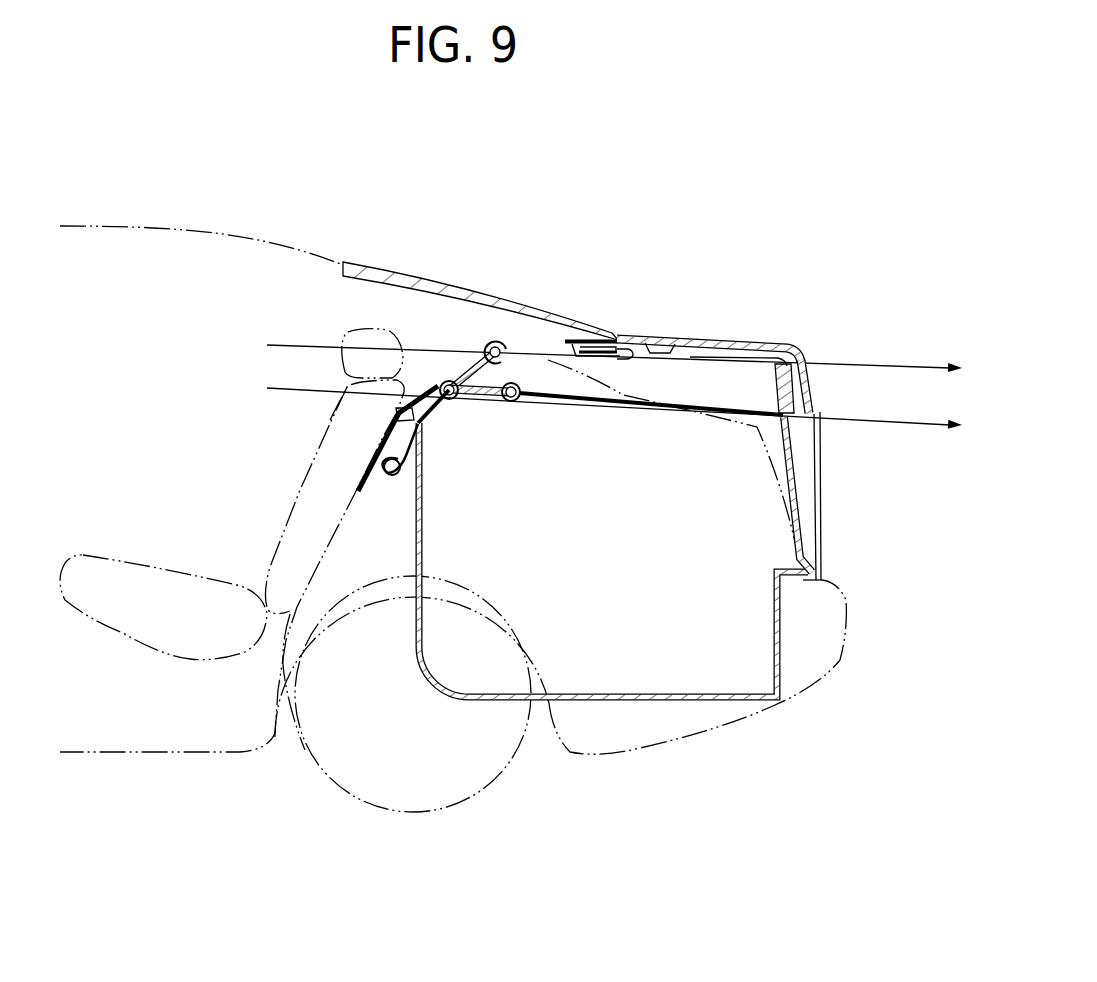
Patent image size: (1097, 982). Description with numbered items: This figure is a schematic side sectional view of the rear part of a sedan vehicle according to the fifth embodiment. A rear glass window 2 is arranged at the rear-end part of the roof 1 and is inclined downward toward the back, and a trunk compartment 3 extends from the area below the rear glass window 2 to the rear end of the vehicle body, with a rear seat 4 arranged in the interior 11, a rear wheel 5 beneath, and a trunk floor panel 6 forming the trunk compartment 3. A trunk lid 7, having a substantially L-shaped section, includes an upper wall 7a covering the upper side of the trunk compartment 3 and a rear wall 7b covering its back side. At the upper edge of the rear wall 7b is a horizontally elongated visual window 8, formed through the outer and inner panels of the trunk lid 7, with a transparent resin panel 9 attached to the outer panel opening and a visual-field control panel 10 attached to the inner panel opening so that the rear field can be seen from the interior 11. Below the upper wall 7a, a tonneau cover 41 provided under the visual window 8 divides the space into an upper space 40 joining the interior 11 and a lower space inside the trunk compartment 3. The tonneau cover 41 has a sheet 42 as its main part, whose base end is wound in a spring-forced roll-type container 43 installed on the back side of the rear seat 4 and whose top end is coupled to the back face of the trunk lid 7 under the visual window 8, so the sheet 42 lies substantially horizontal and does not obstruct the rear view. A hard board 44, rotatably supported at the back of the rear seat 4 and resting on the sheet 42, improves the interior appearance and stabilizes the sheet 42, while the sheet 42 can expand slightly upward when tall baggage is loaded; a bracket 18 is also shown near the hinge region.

The roof 1 is at (290, 243).
The rear glass window 2 is at (450, 272).
The trunk compartment 3 is at (692, 619).
The rear seat 4 is at (303, 488).
The rear wheel 5 is at (507, 767).
The trunk floor panel 6 is at (785, 690).
The trunk lid 7 is at (761, 418).
The upper wall 7a is at (753, 337).
The rear wall 7b is at (821, 500).
The visual window 8 is at (821, 404).
The transparent resin panel 9 is at (815, 385).
The visual-field control panel 10 is at (781, 393).
The interior 11 is at (181, 487).
The bracket 18 is at (622, 360).
The upper space 40 is at (563, 370).
The tonneau cover 41 is at (471, 371).
The sheet 42 is at (628, 411).
The roll-type container 43 is at (393, 477).
The hard board 44 is at (465, 367).